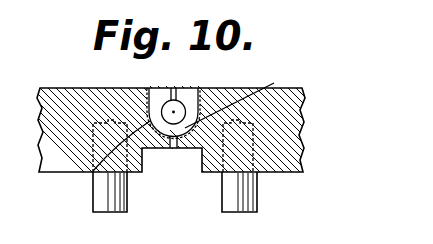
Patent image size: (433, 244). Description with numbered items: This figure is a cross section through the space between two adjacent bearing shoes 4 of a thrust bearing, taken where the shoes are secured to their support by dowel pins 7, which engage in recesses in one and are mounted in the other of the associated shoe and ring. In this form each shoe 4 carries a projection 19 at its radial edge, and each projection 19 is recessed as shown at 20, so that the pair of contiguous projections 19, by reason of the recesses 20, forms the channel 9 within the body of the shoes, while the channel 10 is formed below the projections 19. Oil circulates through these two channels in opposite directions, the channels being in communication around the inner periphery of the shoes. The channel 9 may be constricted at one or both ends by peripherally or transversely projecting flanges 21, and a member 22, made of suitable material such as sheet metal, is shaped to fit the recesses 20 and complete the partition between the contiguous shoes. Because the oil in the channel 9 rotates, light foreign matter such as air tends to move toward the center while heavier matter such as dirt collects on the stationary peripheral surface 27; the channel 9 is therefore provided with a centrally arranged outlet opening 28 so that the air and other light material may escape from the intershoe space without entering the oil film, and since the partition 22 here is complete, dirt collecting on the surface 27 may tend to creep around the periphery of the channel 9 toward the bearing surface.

The bearing shoe 4 is at (66, 104).
The dowel pin 7 is at (102, 200).
The channel 9 is at (204, 87).
The channel 10 is at (199, 175).
The projection 19 is at (143, 189).
The recess 20 is at (146, 93).
The flange 21 is at (174, 98).
The partition member 22 is at (93, 170).
The stationary peripheral surface 27 is at (181, 153).
The outlet opening 28 is at (186, 101).